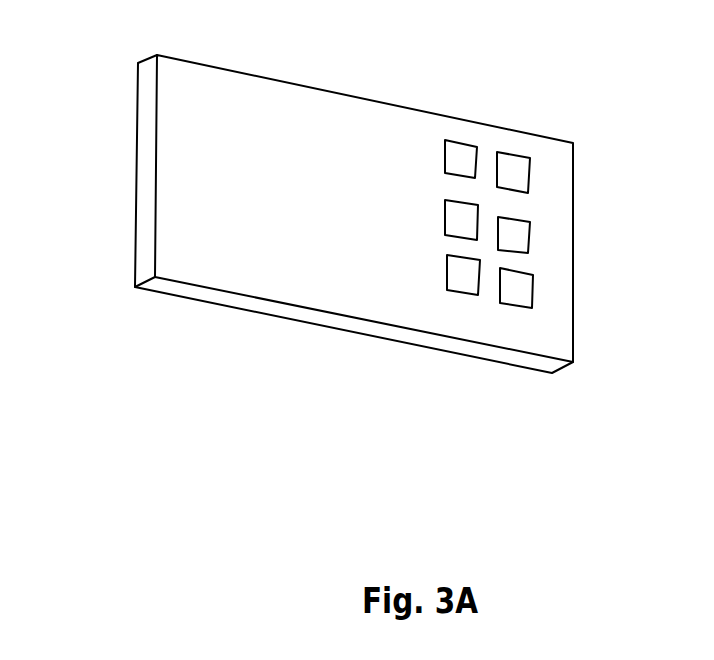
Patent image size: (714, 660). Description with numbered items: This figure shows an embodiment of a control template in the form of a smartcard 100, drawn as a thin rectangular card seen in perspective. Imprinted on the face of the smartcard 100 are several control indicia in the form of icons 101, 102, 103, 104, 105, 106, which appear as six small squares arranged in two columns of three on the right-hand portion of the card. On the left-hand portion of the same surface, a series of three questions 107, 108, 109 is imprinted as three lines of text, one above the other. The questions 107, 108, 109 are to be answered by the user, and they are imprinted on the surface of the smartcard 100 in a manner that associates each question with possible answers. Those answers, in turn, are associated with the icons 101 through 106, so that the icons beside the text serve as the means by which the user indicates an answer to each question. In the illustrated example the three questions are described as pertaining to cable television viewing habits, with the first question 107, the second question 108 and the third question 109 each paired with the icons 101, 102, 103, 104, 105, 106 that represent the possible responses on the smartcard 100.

The smartcard 100 is at (312, 290).
The icon 101 is at (455, 140).
The icon 102 is at (523, 158).
The icon 103 is at (478, 218).
The icon 104 is at (517, 252).
The icon 105 is at (470, 280).
The icon 106 is at (516, 290).
The question 107 is at (312, 123).
The question 108 is at (202, 167).
The question 109 is at (200, 237).